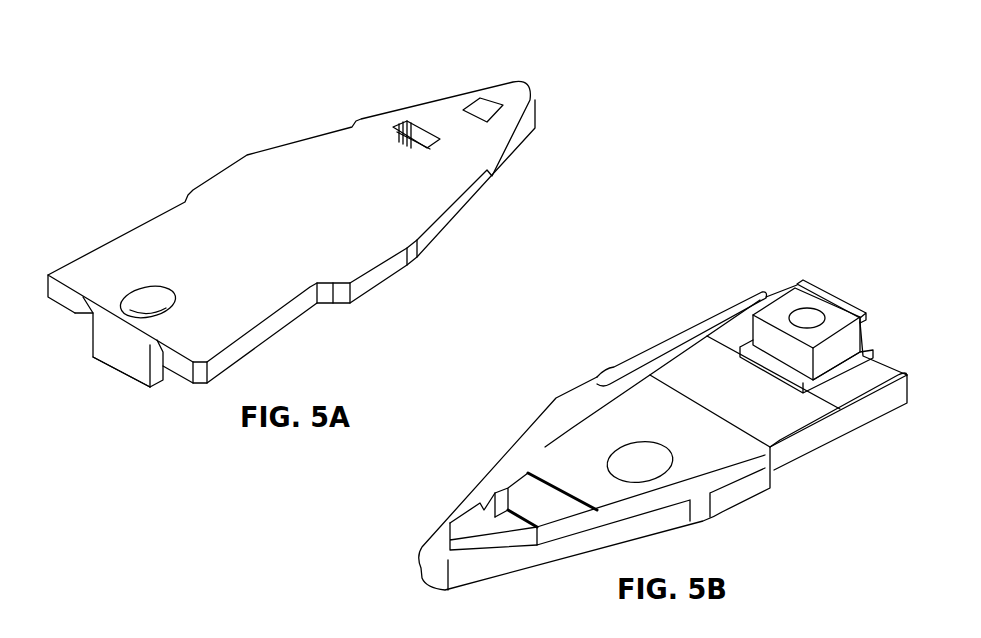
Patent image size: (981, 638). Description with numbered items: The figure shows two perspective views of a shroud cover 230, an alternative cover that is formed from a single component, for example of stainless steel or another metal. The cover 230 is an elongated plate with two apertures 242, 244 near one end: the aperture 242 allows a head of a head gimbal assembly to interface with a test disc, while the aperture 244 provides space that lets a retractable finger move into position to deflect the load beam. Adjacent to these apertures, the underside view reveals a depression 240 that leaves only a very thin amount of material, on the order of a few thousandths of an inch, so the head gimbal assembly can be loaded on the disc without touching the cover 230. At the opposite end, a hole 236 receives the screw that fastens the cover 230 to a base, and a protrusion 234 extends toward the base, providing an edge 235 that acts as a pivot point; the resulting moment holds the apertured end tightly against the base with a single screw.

In FIG. 5A, the shroud cover 230 is at (327, 219).
In FIG. 5B, the shroud cover 230 is at (697, 439).
In FIG. 5A, the protrusion 234 is at (147, 362).
In FIG. 5B, the protrusion 234 is at (842, 348).
In FIG. 5A, the edge 235 is at (150, 387).
In FIG. 5B, the edge 235 is at (808, 292).
In FIG. 5A, the hole 236 is at (152, 302).
In FIG. 5B, the hole 236 is at (805, 318).
In FIG. 5B, the depression 240 is at (538, 503).
In FIG. 5A, the aperture 242 is at (490, 105).
In FIG. 5A, the aperture 244 is at (405, 127).